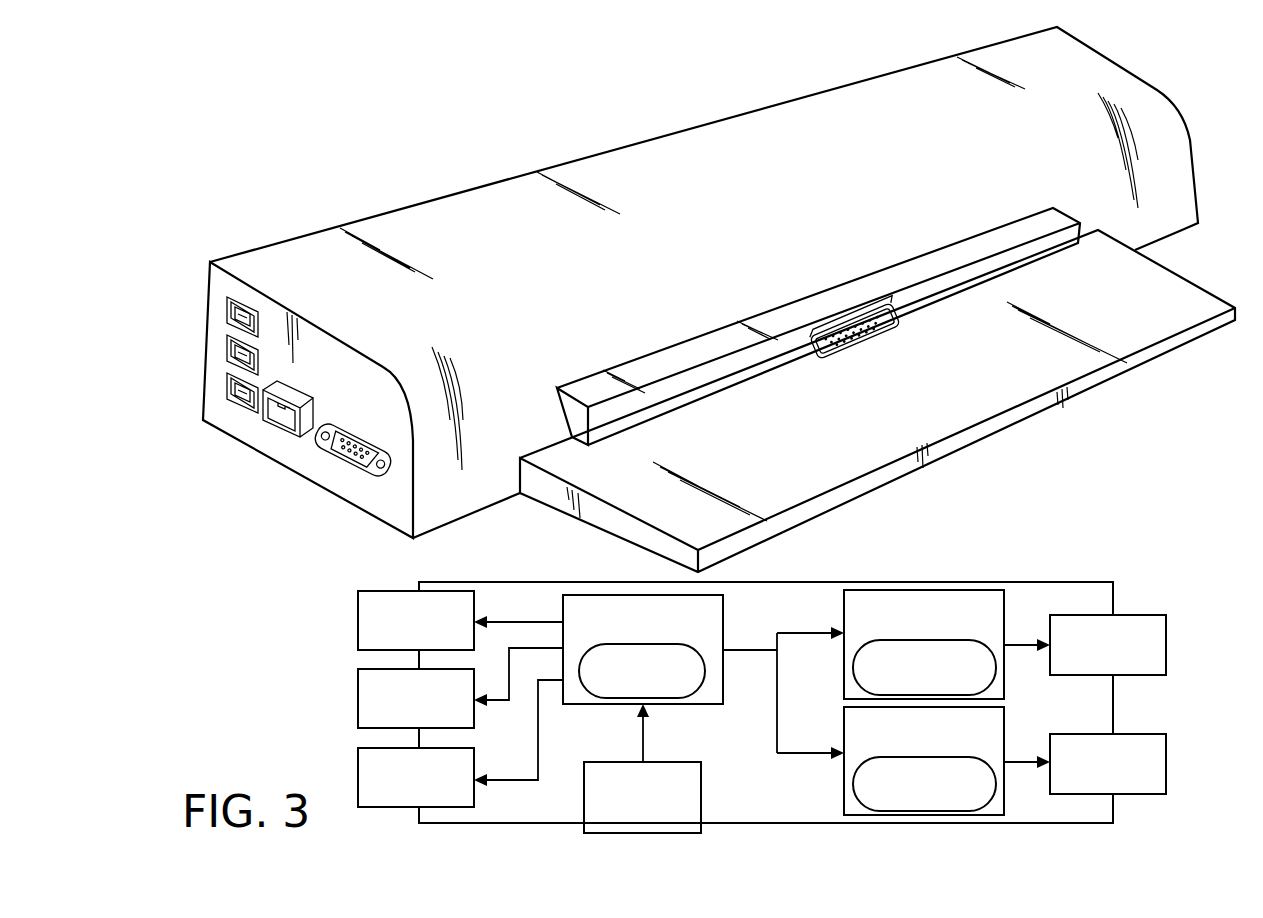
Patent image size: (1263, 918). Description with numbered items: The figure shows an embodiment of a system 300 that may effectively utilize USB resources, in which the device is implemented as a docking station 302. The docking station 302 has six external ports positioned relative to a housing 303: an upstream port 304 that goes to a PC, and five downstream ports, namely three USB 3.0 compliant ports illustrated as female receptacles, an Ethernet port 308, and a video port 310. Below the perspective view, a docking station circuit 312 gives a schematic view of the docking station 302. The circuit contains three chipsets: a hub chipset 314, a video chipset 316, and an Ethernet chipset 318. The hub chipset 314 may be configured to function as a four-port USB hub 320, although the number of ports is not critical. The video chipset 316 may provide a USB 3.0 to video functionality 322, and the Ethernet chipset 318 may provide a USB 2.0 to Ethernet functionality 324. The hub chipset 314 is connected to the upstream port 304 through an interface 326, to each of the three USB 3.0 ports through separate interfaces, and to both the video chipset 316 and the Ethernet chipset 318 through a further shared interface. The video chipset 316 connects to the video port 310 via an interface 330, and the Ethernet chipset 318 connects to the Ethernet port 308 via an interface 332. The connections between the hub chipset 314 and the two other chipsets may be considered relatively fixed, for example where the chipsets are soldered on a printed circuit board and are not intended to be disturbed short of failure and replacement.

The system 300 is at (687, 426).
The docking station 302 is at (596, 148).
The housing 303 is at (395, 209).
The upstream port 304 is at (870, 338).
The Ethernet port 308 is at (285, 390).
The video port 310 is at (347, 426).
The docking station circuit 312 is at (868, 582).
The hub chipset 314 is at (643, 649).
The video chipset 316 is at (924, 644).
The Ethernet chipset 318 is at (924, 760).
The 4-port USB hub 320 is at (642, 671).
The USB 3.0 to video functionality 322 is at (924, 667).
The USB 2.0 to Ethernet functionality 324 is at (924, 784).
The interface 326 is at (643, 746).
The interface 330 is at (1013, 647).
The interface 332 is at (1018, 762).